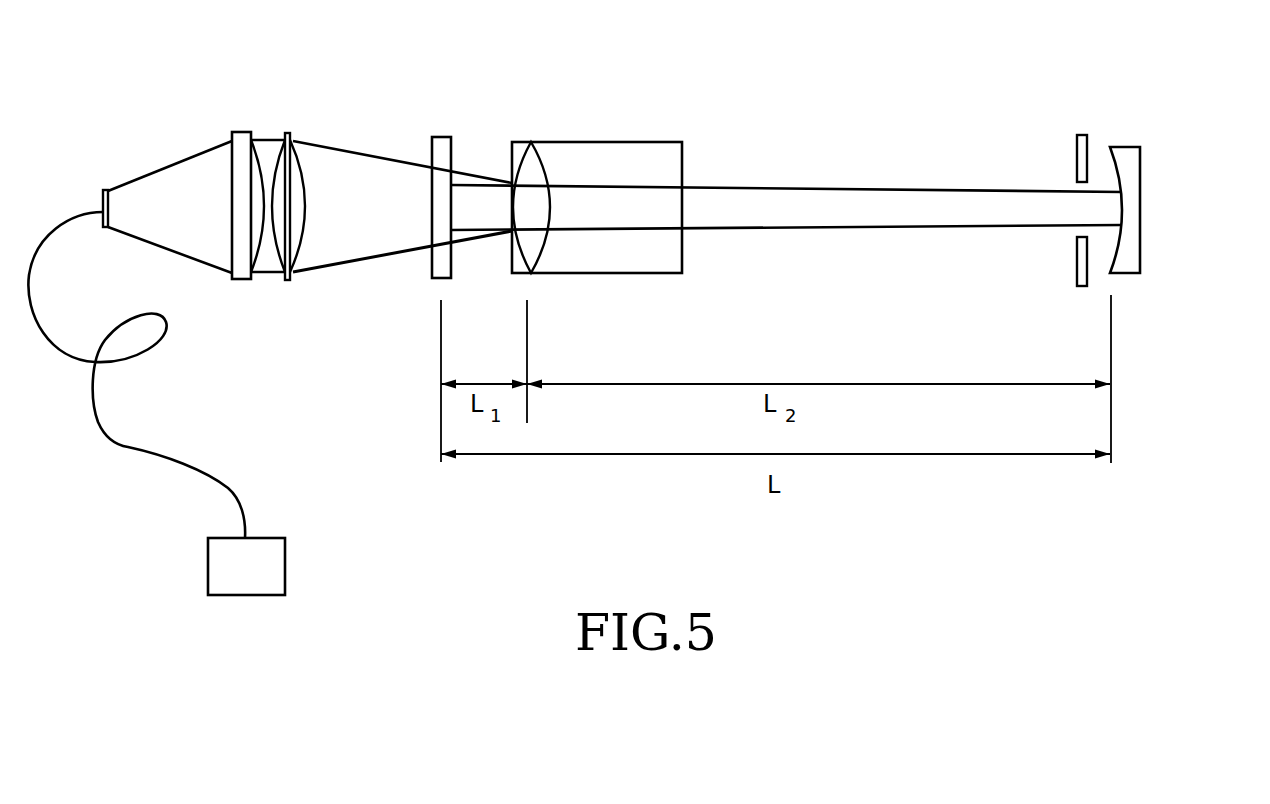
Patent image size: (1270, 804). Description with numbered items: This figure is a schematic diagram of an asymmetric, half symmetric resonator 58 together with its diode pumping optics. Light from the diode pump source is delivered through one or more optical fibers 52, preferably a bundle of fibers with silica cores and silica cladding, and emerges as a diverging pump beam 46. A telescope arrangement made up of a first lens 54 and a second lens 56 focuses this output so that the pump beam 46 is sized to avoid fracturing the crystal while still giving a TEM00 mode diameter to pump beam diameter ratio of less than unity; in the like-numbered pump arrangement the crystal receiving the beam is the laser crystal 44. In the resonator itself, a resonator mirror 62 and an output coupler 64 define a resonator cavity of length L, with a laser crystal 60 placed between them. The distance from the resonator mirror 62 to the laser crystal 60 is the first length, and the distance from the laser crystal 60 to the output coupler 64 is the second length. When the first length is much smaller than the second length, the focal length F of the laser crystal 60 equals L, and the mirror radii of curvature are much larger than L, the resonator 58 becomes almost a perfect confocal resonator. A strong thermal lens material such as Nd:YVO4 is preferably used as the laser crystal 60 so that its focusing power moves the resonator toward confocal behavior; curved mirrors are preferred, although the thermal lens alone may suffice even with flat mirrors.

The laser crystal 44 is at (267, 570).
The pump beam 46 is at (352, 173).
The optical fibers 52 is at (128, 447).
The first lens 54 is at (239, 118).
The second lens 56 is at (291, 125).
The half symmetric resonator 58 is at (806, 106).
The laser crystal 60 is at (613, 273).
The resonator mirror 62 is at (453, 153).
The output coupler 64 is at (1118, 166).